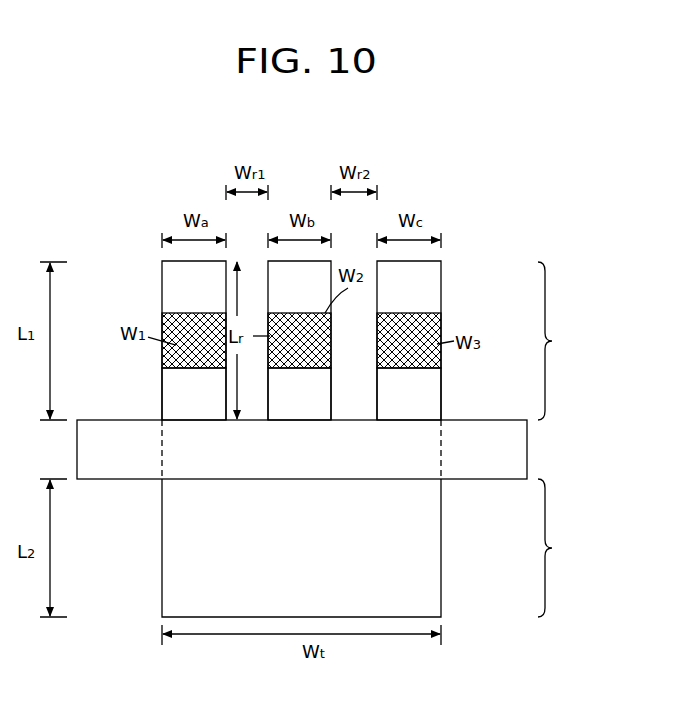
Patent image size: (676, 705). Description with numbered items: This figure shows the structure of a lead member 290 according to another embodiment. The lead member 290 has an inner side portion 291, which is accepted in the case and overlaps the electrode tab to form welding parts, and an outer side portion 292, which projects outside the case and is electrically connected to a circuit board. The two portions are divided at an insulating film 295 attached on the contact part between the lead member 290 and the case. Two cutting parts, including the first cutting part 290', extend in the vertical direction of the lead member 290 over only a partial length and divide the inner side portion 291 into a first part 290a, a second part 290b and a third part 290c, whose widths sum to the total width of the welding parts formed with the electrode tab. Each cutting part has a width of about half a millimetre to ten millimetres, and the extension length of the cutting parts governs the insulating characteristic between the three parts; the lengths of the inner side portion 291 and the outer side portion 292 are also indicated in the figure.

The lead member 290 is at (333, 518).
The first part 290a is at (178, 393).
The second part 290b is at (298, 298).
The third part 290c is at (434, 272).
The first cutting part 290' is at (348, 324).
The inner side portion 291 is at (569, 341).
The outer side portion 292 is at (569, 548).
The insulating film 295 is at (515, 447).